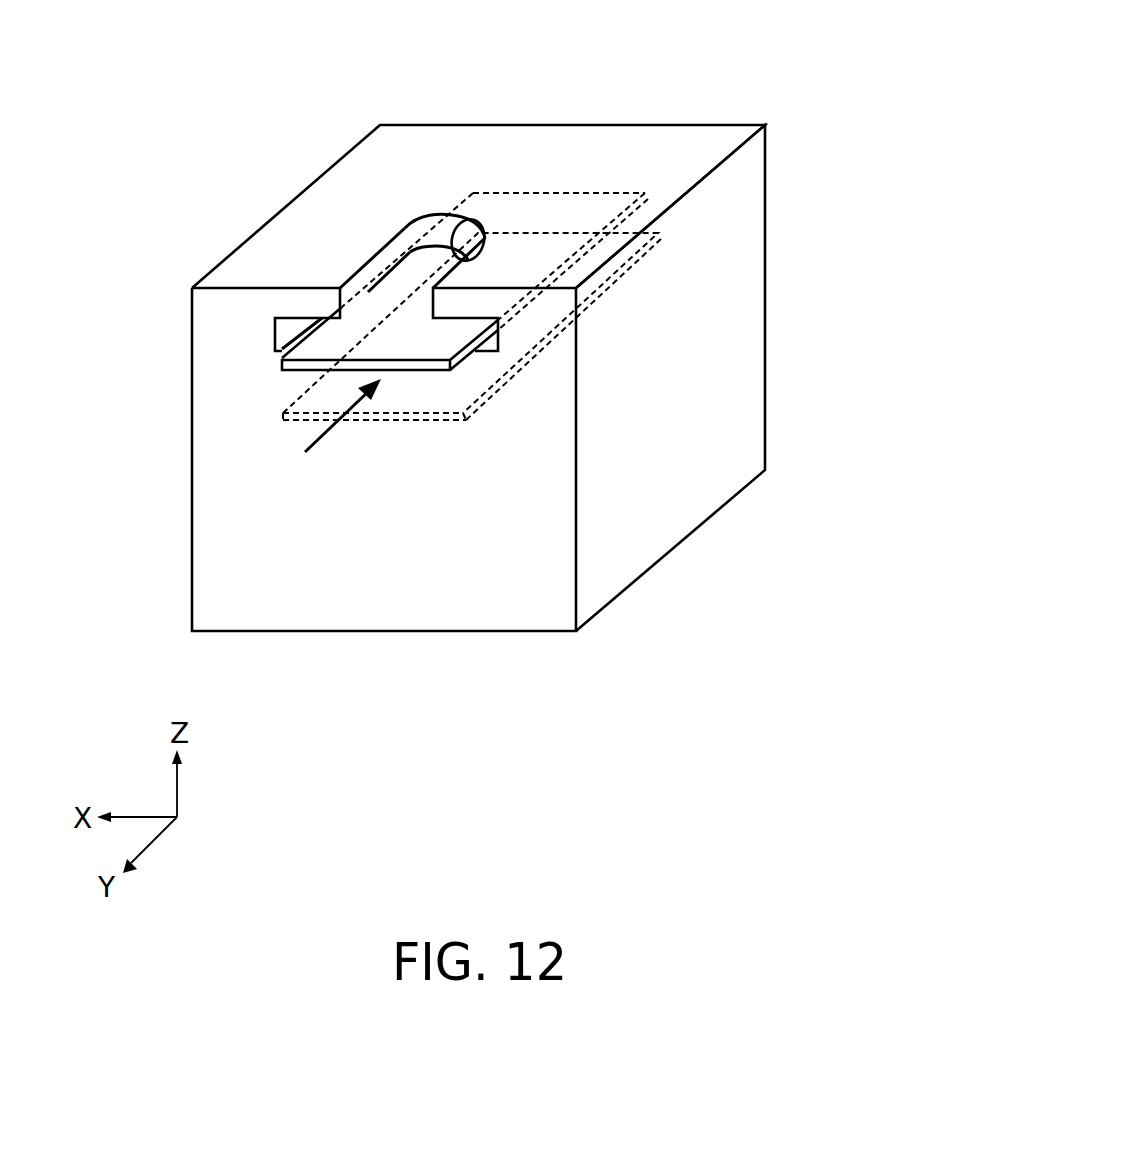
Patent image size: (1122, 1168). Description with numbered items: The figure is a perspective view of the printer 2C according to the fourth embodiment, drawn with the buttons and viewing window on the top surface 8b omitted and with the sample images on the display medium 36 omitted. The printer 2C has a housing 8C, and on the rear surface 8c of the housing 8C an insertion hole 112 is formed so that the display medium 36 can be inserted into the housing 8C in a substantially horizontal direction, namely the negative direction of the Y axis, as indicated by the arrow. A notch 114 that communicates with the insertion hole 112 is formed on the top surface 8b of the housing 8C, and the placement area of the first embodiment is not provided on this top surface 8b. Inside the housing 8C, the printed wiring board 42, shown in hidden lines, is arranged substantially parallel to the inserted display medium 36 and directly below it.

The printer 2C is at (497, 324).
The top surface 8b is at (642, 138).
The housing 8C is at (747, 270).
The rear surface 8c is at (222, 535).
The insertion hole 112 is at (317, 206).
The notch 114 is at (456, 265).
The display medium 36 is at (280, 363).
The printed wiring board 42 is at (283, 414).